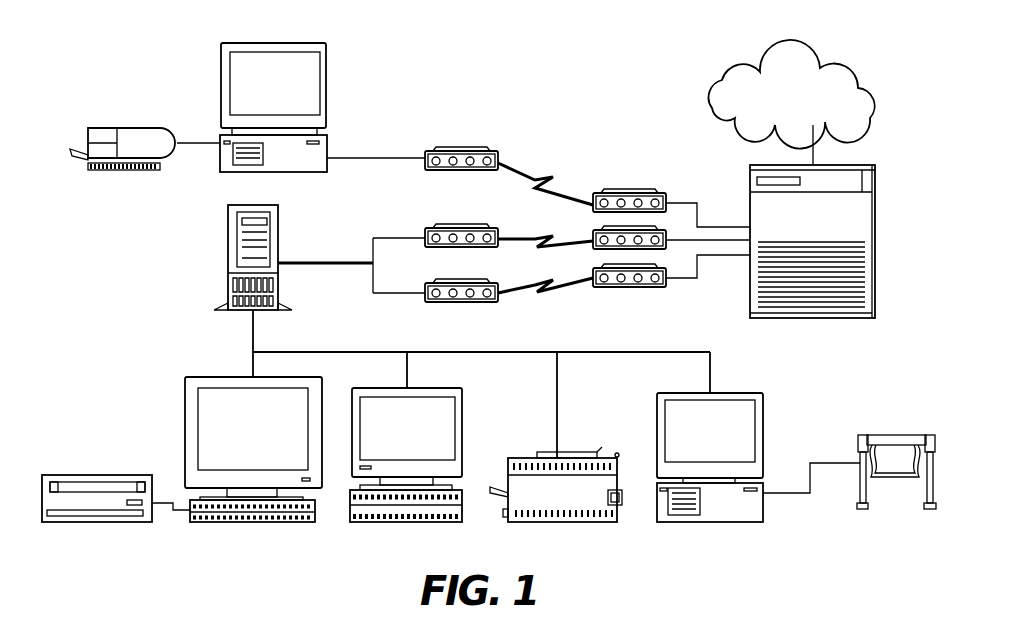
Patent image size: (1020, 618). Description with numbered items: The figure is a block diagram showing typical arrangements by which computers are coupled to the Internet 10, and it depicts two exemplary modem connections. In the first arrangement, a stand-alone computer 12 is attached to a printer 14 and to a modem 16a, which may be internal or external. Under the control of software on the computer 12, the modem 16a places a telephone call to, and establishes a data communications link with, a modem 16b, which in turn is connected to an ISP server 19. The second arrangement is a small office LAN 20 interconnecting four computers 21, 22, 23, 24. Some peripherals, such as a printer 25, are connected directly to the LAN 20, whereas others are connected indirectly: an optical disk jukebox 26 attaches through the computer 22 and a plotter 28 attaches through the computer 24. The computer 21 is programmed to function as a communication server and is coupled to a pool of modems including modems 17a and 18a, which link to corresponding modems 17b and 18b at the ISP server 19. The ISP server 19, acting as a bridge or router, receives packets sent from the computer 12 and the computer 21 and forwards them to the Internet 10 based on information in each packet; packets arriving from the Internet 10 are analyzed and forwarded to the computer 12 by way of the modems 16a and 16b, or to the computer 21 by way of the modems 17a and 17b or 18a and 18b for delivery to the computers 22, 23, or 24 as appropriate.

The Internet 10 is at (722, 80).
The computer 12 is at (270, 43).
The printer 14 is at (148, 127).
The modem 16a is at (455, 147).
The modem 16b is at (627, 189).
The modem 17a is at (442, 224).
The modem 17b is at (593, 226).
The modem 18a is at (440, 303).
The modem 18b is at (623, 288).
The ISP server 19 is at (768, 165).
The small office LAN 20 is at (253, 337).
The computer 21 is at (228, 232).
The computer 22 is at (207, 377).
The computer 23 is at (425, 388).
The computer 24 is at (676, 393).
The printer 25 is at (540, 458).
The optical disk jukebox 26 is at (93, 475).
The plotter 28 is at (877, 435).